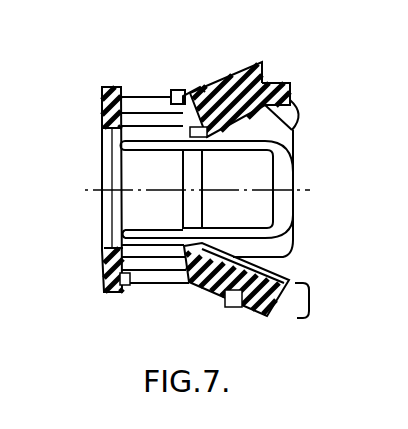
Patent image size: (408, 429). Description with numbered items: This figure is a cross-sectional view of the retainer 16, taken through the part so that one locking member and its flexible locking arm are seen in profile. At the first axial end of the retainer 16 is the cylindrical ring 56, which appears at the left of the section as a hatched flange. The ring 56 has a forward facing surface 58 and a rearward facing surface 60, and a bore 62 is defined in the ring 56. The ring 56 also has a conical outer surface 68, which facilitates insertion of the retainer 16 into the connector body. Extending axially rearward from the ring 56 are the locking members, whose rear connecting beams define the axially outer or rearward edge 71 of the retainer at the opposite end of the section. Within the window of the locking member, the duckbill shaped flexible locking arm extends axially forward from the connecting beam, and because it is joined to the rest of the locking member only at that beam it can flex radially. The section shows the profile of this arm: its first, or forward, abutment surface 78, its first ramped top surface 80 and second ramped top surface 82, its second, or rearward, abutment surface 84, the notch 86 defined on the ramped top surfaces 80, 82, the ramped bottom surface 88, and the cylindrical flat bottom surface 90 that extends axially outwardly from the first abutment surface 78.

The retainer 16 is at (183, 52).
The cylindrical ring 56 is at (110, 87).
The forward facing surface 58 is at (101, 116).
The rearward facing surface 60 is at (125, 277).
The bore 62 is at (112, 175).
The conical outer surface 68 is at (104, 292).
The axially outer edge 71 is at (290, 305).
The first abutment surface 78 is at (173, 90).
The first ramped top surface 80 is at (180, 88).
The second ramped top surface 82 is at (253, 62).
The second abutment surface 84 is at (276, 80).
The notch 86 is at (228, 296).
The ramped bottom surface 88 is at (293, 133).
The cylindrical flat bottom surface 90 is at (192, 130).